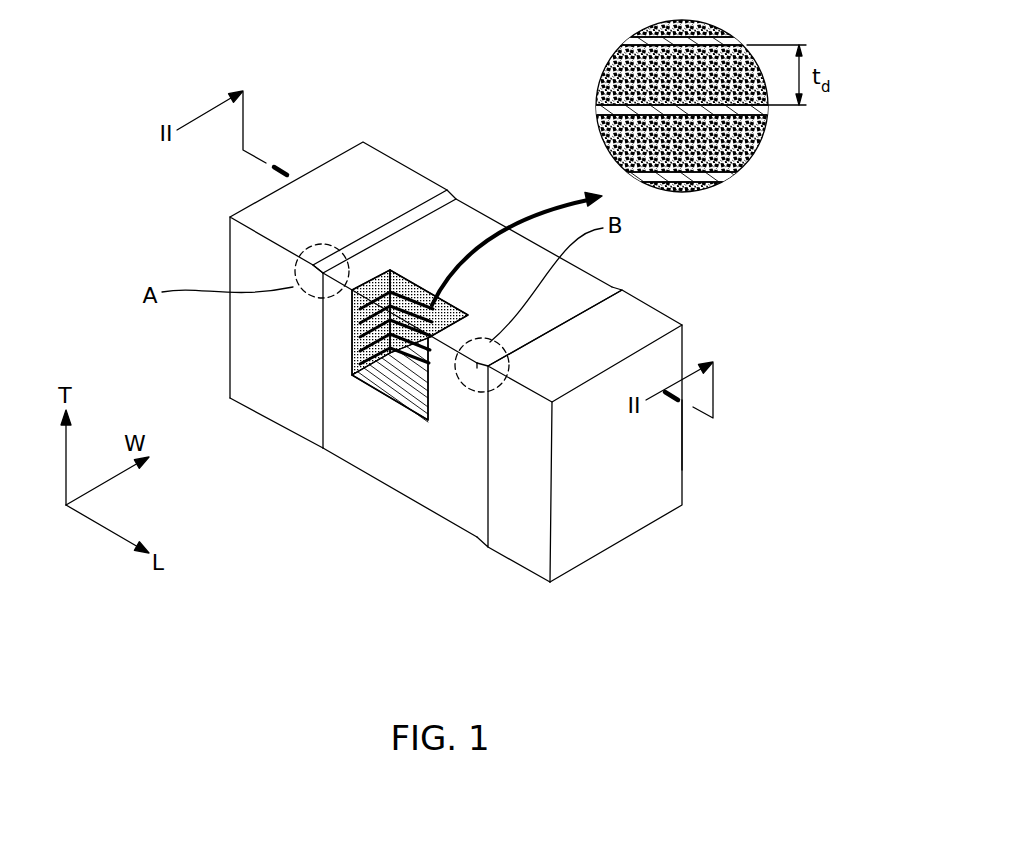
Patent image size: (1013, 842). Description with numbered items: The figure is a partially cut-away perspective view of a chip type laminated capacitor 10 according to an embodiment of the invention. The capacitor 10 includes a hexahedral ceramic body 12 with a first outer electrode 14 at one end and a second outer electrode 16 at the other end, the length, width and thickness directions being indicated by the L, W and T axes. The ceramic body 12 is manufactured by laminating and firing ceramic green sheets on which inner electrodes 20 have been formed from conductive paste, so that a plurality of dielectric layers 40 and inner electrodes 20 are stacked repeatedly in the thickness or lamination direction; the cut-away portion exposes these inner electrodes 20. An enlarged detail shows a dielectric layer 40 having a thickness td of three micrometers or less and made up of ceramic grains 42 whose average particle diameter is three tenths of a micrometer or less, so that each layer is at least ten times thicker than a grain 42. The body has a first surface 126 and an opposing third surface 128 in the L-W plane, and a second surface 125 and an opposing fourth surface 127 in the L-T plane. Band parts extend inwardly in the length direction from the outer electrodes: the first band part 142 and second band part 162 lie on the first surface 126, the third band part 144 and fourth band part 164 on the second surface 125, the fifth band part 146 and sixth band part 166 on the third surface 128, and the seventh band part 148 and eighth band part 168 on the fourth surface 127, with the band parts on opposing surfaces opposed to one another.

The chip type laminated capacitor 10 is at (145, 73).
The ceramic body 12 is at (467, 232).
The first outer electrode 14 is at (238, 188).
The second outer electrode 16 is at (702, 307).
The inner electrode 20 is at (372, 375).
The dielectric layer 40 is at (745, 140).
The ceramic grain 42 is at (733, 172).
The second surface 125 is at (398, 457).
The first surface 126 is at (565, 278).
The fourth surface 127 is at (683, 437).
The third surface 128 is at (447, 518).
The first band part 142 is at (355, 178).
The third band part 144 is at (285, 400).
The fifth band part 146 is at (245, 408).
The seventh band part 148 is at (403, 162).
The second band part 162 is at (635, 308).
The fourth band part 164 is at (523, 532).
The sixth band part 166 is at (615, 548).
The eighth band part 168 is at (683, 477).